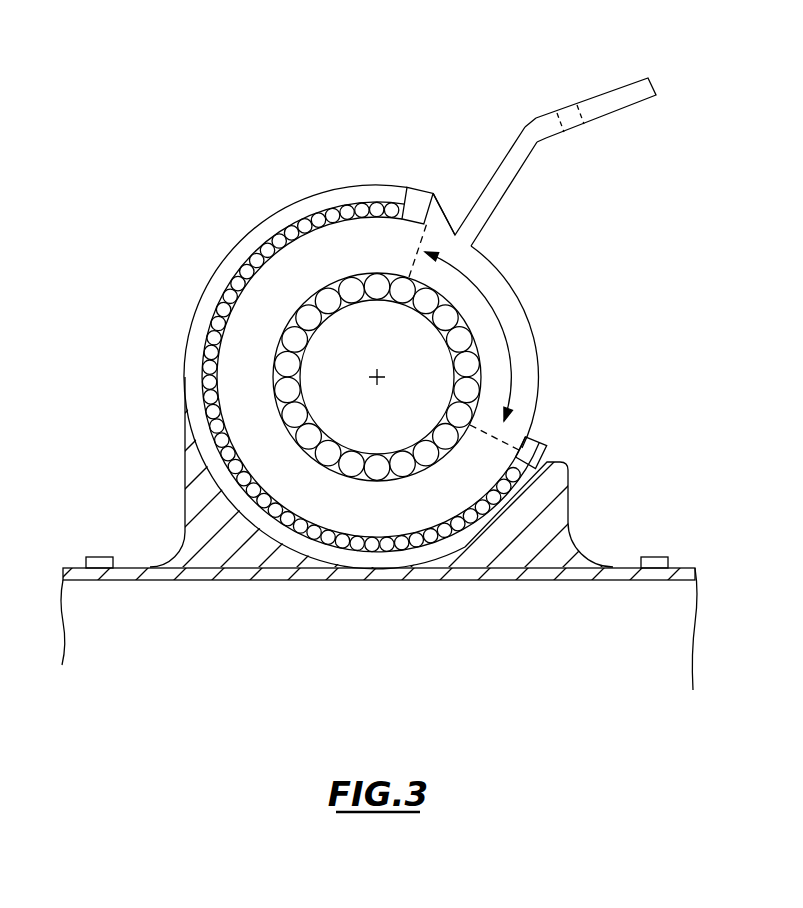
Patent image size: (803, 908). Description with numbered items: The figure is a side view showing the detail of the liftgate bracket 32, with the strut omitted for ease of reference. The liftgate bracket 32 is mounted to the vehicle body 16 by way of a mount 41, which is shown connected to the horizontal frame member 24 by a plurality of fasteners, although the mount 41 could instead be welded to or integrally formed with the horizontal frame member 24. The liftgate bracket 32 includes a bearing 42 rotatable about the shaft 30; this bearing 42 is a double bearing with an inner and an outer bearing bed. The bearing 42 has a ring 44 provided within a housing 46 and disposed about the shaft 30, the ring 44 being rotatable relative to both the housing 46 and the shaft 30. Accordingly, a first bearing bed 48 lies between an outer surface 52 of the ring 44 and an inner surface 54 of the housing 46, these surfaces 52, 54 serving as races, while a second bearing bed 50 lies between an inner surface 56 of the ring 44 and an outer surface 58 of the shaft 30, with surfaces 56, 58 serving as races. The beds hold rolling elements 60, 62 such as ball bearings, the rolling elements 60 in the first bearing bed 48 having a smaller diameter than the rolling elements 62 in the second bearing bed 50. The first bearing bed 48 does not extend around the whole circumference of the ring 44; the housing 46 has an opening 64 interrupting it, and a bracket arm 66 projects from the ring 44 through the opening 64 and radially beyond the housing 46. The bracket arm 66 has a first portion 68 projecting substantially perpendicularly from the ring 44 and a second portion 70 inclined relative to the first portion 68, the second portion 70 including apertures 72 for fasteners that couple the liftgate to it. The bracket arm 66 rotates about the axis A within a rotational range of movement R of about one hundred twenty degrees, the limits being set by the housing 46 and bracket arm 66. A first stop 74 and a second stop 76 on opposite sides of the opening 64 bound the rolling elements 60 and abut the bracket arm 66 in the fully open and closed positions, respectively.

The vehicle body 16 is at (692, 607).
The horizontal frame member 24 is at (364, 629).
The shaft 30 is at (317, 393).
The liftgate bracket 32 is at (365, 347).
The mount 41 is at (192, 547).
The bearing 42 is at (520, 337).
The ring 44 is at (503, 297).
The housing 46 is at (193, 352).
The first bearing bed 48 is at (246, 261).
The second bearing bed 50 is at (286, 431).
The outer surface of the ring 52 is at (293, 222).
The inner surface of the housing 54 is at (363, 202).
The inner surface of the ring 56 is at (480, 404).
The outer surface of the shaft 58 is at (453, 327).
The rolling elements 60 is at (402, 186).
The rolling elements 62 is at (437, 298).
The opening 64 is at (457, 232).
The bracket arm 66 is at (555, 132).
The first portion 68 is at (523, 153).
The second portion 70 is at (634, 98).
The apertures 72 is at (573, 103).
The first stop 74 is at (455, 207).
The second stop 76 is at (547, 462).
The axis A is at (380, 383).
The rotational range of movement R is at (513, 372).